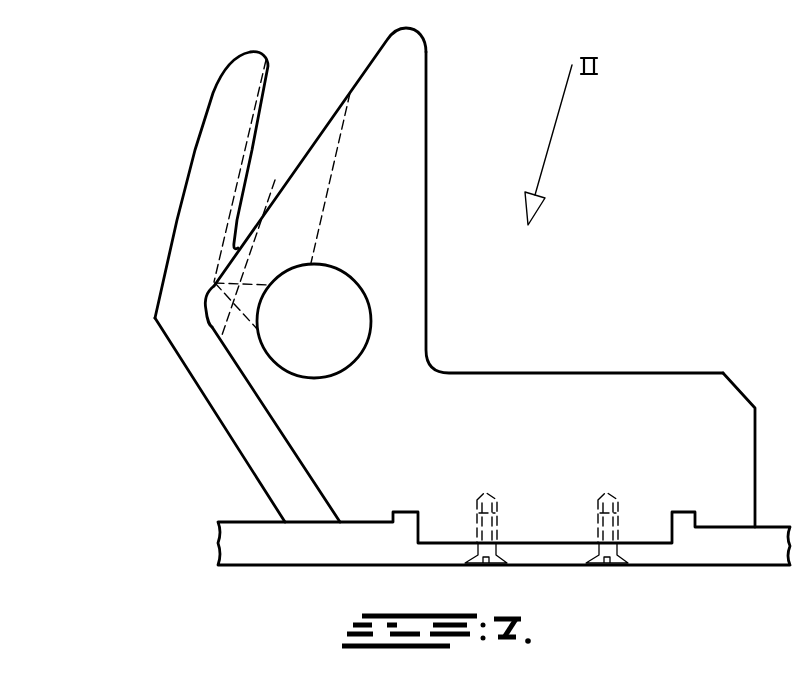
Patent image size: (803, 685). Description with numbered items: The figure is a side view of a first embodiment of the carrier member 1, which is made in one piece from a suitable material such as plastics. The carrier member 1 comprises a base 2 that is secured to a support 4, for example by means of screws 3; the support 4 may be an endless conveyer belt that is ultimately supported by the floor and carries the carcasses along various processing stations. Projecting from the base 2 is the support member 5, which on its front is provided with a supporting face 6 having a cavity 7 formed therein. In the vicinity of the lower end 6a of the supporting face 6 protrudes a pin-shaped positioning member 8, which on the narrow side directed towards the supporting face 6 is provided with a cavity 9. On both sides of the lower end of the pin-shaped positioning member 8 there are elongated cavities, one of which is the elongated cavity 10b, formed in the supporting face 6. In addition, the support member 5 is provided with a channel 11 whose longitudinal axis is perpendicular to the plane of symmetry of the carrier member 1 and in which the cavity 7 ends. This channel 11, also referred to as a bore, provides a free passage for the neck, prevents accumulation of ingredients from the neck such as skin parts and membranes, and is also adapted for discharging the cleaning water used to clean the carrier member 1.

The carrier member 1 is at (484, 272).
The base 2 is at (657, 387).
The screws 3 is at (480, 525).
The support 4 is at (682, 557).
The support member 5 is at (418, 295).
The supporting face 6 is at (368, 63).
The lower end of the supporting face 6a is at (152, 343).
The cavity 7 is at (327, 148).
The pin-shaped positioning member 8 is at (208, 148).
The cavity 9 is at (263, 88).
The elongated cavity 10b is at (211, 329).
The channel 11 is at (357, 331).